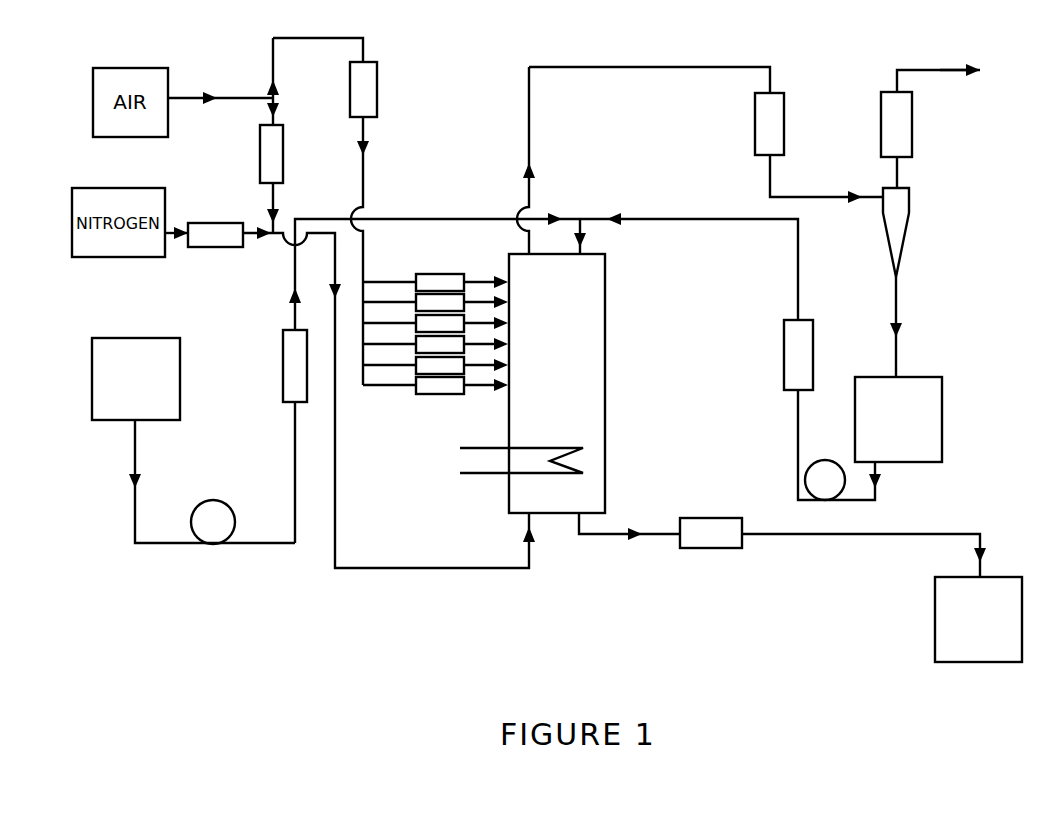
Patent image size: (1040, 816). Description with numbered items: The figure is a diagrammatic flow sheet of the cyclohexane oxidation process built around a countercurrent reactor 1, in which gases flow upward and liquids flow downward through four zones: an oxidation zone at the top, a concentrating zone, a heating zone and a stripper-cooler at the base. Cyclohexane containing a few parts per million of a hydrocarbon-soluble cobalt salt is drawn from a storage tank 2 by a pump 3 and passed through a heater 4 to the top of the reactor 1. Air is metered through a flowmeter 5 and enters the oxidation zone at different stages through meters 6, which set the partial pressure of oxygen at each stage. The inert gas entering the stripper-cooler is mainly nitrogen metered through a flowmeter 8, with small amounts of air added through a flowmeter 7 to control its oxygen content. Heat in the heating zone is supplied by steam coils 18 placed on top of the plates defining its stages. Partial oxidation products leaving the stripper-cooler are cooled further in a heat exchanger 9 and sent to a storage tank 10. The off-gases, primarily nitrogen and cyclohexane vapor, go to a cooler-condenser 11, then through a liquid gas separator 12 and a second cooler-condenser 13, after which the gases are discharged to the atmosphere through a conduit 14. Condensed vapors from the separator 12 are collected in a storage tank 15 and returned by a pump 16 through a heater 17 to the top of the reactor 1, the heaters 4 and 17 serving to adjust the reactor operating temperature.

The reactor 1 is at (597, 333).
The storage tank 2 is at (165, 375).
The pump 3 is at (213, 522).
The heater 4 is at (293, 371).
The flowmeter 5 is at (366, 92).
The meters 6 is at (445, 323).
The flowmeter 7 is at (275, 155).
The flowmeter 8 is at (206, 231).
The heat exchanger 9 is at (696, 533).
The storage tank 10 is at (951, 614).
The cooler-condenser 11 is at (771, 124).
The liquid gas separator 12 is at (896, 215).
The second cooler-condenser 13 is at (900, 133).
The conduit 14 is at (966, 50).
The storage tank 15 is at (918, 428).
The pump 16 is at (822, 478).
The heater 17 is at (798, 356).
The steam coils 18 is at (572, 447).